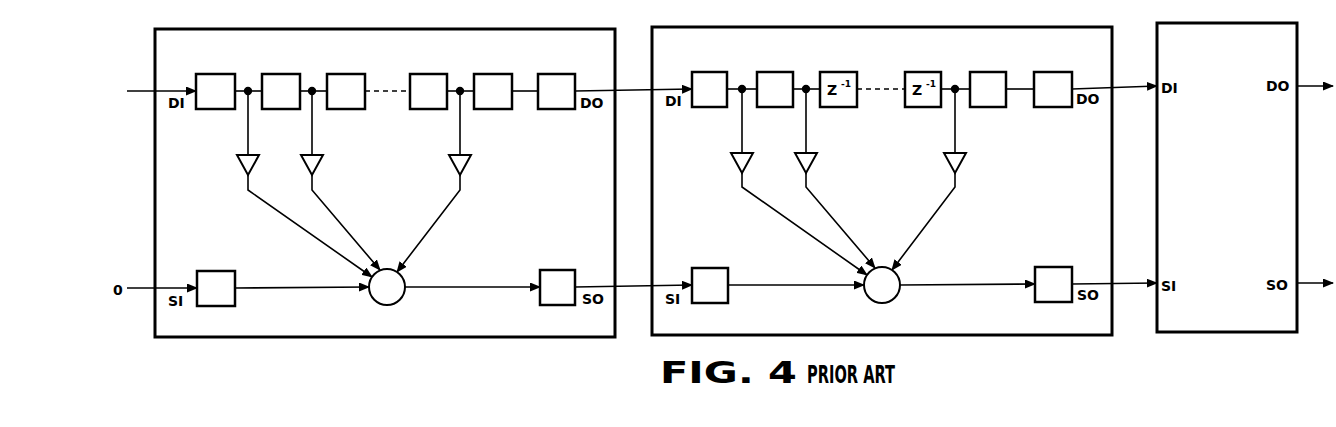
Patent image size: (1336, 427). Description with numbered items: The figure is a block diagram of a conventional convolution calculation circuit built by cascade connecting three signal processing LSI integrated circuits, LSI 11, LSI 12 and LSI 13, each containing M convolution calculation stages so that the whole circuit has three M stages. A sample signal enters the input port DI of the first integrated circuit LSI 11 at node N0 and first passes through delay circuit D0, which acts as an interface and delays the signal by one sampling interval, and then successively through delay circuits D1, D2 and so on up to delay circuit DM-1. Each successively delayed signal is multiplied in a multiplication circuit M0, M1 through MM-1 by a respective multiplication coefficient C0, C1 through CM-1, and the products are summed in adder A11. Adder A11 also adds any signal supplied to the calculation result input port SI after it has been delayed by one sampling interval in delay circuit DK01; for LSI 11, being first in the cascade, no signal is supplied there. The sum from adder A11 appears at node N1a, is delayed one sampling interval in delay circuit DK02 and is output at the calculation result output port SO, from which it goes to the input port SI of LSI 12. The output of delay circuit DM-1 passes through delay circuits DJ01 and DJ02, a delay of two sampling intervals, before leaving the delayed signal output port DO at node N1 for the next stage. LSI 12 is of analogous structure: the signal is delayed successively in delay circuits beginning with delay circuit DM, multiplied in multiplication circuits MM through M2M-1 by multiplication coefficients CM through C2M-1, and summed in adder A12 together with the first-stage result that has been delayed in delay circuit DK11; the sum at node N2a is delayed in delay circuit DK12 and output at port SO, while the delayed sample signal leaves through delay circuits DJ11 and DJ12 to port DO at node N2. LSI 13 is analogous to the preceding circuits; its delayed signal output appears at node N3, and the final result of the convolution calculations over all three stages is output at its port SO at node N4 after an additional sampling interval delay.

The signal processing LSI integrated circuit 11 is at (432, 338).
The signal processing LSI integrated circuit 12 is at (1013, 336).
The signal processing LSI integrated circuit 13 is at (1212, 334).
The delay circuit D0 is at (211, 74).
The delay circuit D1 is at (277, 74).
The delay circuit D2 is at (344, 74).
The delay circuit DM-1 is at (429, 74).
The delay circuit DJ01 is at (493, 74).
The delay circuit DJ02 is at (561, 74).
The delay circuit DM is at (708, 72).
The delay element DJ11 is at (985, 72).
The delay element DJ12 is at (1052, 72).
The multiplication circuit M0 is at (237, 158).
The multiplication circuit M1 is at (300, 158).
The multiplication circuit MM-1 is at (449, 158).
The multiplication circuit MM is at (731, 156).
The multiplication circuit M2M-1 is at (944, 156).
The coefficient multiplier C0 is at (304, 216).
The coefficient multiplier C1 is at (340, 212).
The coefficient multiplier CM-1 is at (456, 213).
The multiplication coefficient CM is at (799, 214).
The multiplication coefficient C2M-1 is at (956, 211).
The delay circuit DK01 is at (212, 271).
The delay circuit DK02 is at (557, 270).
The delay circuit DK11 is at (708, 268).
The delay circuit DK12 is at (1052, 267).
The adder A11 is at (398, 300).
The adder A12 is at (894, 298).
The node N0 is at (161, 81).
The node N1 is at (633, 80).
The node N1a is at (472, 278).
The node N2 is at (1114, 78).
The node N2a is at (967, 275).
The node N3 is at (1315, 75).
The node N4 is at (1315, 272).